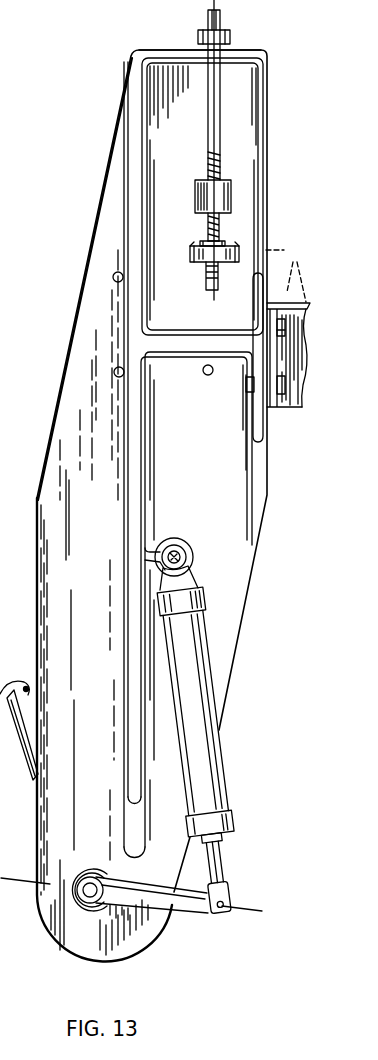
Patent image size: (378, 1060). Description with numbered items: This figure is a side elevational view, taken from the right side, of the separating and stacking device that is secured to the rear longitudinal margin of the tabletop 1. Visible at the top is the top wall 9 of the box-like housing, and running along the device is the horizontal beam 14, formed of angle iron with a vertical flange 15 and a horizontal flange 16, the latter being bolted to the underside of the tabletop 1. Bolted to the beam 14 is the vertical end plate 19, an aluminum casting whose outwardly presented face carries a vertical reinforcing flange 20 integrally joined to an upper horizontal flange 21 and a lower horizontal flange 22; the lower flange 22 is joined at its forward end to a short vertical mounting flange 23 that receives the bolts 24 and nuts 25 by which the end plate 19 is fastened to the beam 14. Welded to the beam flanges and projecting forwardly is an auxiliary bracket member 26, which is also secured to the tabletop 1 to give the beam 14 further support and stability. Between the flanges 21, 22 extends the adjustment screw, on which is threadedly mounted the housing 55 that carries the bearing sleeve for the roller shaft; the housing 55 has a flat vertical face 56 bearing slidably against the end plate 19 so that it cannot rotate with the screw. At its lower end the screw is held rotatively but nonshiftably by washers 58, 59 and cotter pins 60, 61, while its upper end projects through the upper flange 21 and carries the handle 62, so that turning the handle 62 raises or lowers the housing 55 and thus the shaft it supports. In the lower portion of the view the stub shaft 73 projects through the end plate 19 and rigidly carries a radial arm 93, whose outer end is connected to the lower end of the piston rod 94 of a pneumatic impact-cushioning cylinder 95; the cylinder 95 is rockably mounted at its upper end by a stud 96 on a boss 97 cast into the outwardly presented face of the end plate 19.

The tabletop 1 is at (285, 250).
The top wall 9 is at (28, 757).
The horizontal beam 14 is at (211, 15).
The vertical flange 15 is at (8, 937).
The horizontal flange 16 is at (268, 357).
The vertical end plate 19 is at (263, 160).
The vertical reinforcing flange 20 is at (131, 248).
The upper horizontal flange 21 is at (268, 55).
The lower horizontal flange 22 is at (192, 343).
The short vertical mounting flange 23 is at (257, 433).
The bolts 24 is at (254, 332).
The nuts 25 is at (278, 330).
The auxiliary bracket member 26 is at (283, 404).
The housing 55 is at (227, 180).
The flat vertical face 56 is at (221, 112).
The washer 58 is at (202, 244).
The washer 59 is at (196, 265).
The cotter pin 60 is at (219, 233).
The cotter pin 61 is at (207, 272).
The handle 62 is at (231, 34).
The stub shaft 73 is at (89, 892).
The radial arm 93 is at (163, 908).
The piston rod 94 is at (222, 870).
The pneumatic impact-cushioning cylinder 95 is at (196, 693).
The stud 96 is at (188, 563).
The boss 97 is at (190, 548).